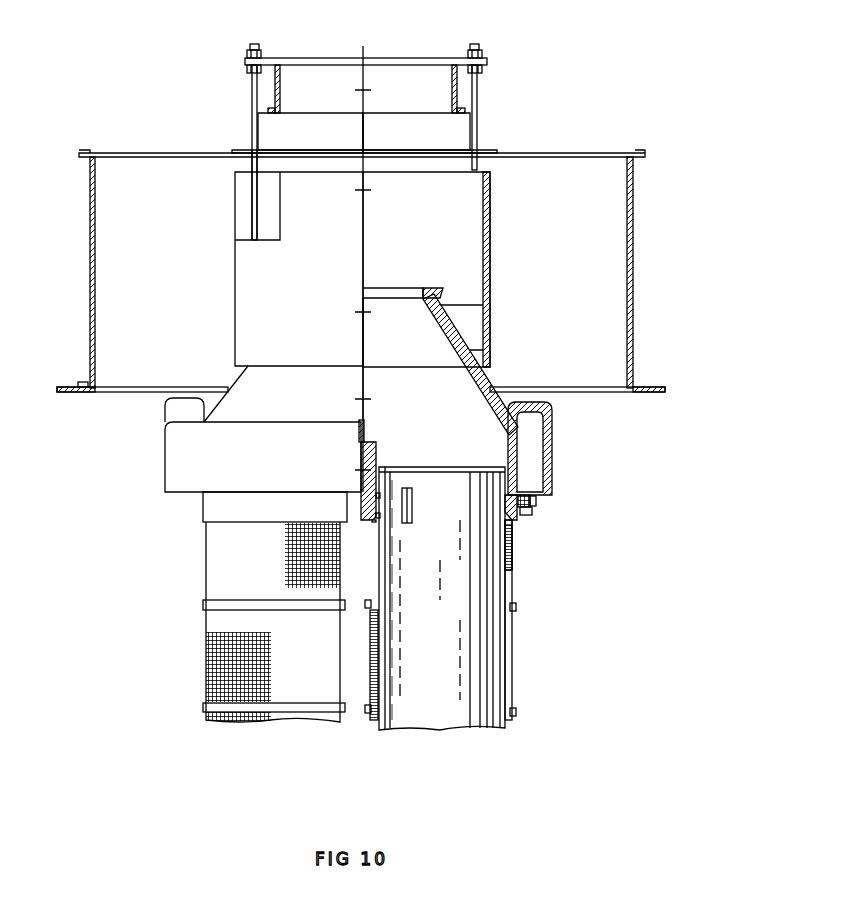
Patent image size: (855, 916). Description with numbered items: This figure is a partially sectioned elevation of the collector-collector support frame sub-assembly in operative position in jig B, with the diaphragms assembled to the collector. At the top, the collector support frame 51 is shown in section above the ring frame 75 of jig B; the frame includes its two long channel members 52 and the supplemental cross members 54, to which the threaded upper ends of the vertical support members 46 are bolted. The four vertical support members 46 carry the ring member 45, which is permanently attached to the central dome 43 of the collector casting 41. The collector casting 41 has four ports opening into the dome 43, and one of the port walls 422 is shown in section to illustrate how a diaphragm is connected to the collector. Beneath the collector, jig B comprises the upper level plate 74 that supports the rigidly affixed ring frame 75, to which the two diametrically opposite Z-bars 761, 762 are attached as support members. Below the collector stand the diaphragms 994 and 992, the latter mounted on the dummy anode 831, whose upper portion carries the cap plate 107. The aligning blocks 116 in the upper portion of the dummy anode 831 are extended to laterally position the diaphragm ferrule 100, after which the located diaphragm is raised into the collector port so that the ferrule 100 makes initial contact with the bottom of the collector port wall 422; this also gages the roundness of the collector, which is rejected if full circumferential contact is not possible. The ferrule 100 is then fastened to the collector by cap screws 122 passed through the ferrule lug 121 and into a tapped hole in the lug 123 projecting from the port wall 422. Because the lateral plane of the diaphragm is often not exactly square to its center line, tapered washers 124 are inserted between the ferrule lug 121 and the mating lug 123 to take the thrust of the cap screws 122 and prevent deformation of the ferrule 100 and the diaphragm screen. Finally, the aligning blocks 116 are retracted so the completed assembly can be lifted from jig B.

The collector support frame 51 is at (378, 58).
The supplemental cross members 54 is at (266, 52).
The vertical support members 46 is at (482, 90).
The channel members 52 is at (281, 86).
The Z-bar 761 is at (297, 133).
The Z-bar 762 is at (430, 133).
The ring frame 75 is at (88, 225).
The upper level plate 74 is at (80, 395).
The ring member 45 is at (362, 258).
The collector casting 41 is at (520, 374).
The central dome 43 is at (395, 359).
The collector port wall 422 is at (378, 446).
The diaphragm 994 is at (205, 620).
The cap plate 107 is at (431, 466).
The dummy anode 831 is at (410, 600).
The aligning blocks 116 is at (414, 494).
The diaphragm 992 is at (512, 636).
The cap screws 122 is at (522, 517).
The lug 123 is at (533, 498).
The tapered washers 124 is at (538, 506).
The ferrule lug 121 is at (528, 512).
The diaphragm ferrule 100 is at (516, 522).